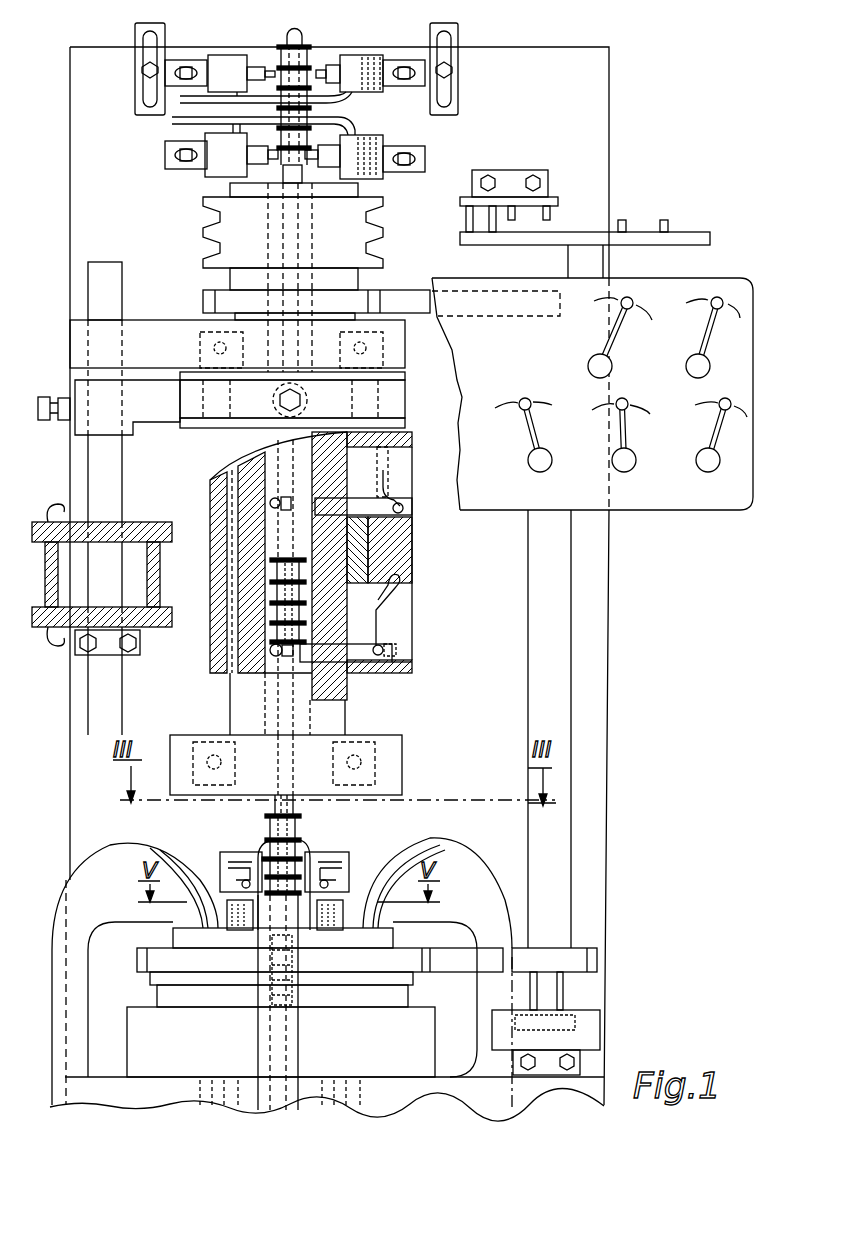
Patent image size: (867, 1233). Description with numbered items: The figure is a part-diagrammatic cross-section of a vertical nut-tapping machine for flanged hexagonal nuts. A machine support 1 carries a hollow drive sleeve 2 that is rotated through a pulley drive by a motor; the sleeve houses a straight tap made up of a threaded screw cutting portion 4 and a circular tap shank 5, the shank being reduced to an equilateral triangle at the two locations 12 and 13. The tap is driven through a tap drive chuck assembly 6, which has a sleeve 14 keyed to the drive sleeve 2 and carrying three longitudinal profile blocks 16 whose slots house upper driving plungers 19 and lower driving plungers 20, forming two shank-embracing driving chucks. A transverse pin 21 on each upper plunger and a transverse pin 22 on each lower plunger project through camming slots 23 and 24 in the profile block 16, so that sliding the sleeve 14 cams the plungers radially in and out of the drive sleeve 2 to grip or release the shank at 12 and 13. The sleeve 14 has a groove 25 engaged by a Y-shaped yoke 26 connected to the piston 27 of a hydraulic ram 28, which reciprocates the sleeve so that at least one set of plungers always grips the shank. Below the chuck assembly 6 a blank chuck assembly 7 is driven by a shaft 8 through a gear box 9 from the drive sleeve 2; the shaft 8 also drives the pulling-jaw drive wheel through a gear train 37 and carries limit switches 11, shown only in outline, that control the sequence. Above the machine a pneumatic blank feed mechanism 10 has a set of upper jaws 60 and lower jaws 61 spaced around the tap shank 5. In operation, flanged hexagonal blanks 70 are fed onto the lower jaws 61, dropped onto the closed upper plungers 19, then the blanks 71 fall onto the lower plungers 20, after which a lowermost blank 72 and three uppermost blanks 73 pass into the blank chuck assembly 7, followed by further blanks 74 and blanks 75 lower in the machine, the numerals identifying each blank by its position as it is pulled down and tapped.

The machine support 1 is at (585, 122).
The hollow drive sleeve 2 is at (343, 277).
The threaded screw cutting portion 4 is at (282, 988).
The tap shank 5 is at (280, 805).
The tap drive chuck assembly 6 is at (450, 617).
The blank chuck assembly 7 is at (374, 813).
The drive shaft 8 is at (555, 653).
The gear box 9 is at (663, 322).
The blank feed mechanism 10 is at (480, 80).
The limit switches 11 is at (553, 213).
The reduced section of tap shank 12 is at (287, 506).
The reduced section of tap shank 13 is at (283, 650).
The sleeve 14 is at (410, 503).
The profile block 16 is at (403, 505).
The upper driving plungers 19 is at (418, 553).
The lower driving plungers 20 is at (336, 654).
The transverse pin 21 is at (410, 518).
The transverse pin 22 is at (384, 650).
The camming slot 23 is at (383, 463).
The camming slot 24 is at (392, 614).
The groove 25 is at (368, 400).
The Y-shaped yoke 26 is at (157, 408).
The piston 27 is at (105, 500).
The hydraulic ram 28 is at (117, 590).
The gear train 37 is at (455, 960).
The upper jaws 60 is at (333, 68).
The lower jaws 61 is at (327, 157).
The flanged hexagonal blanks 70 is at (307, 137).
The blanks 71 is at (278, 577).
The lowermost blank 72 is at (290, 897).
The uppermost blanks 73 is at (293, 872).
The collar 74 is at (278, 852).
The ring 75 is at (292, 827).